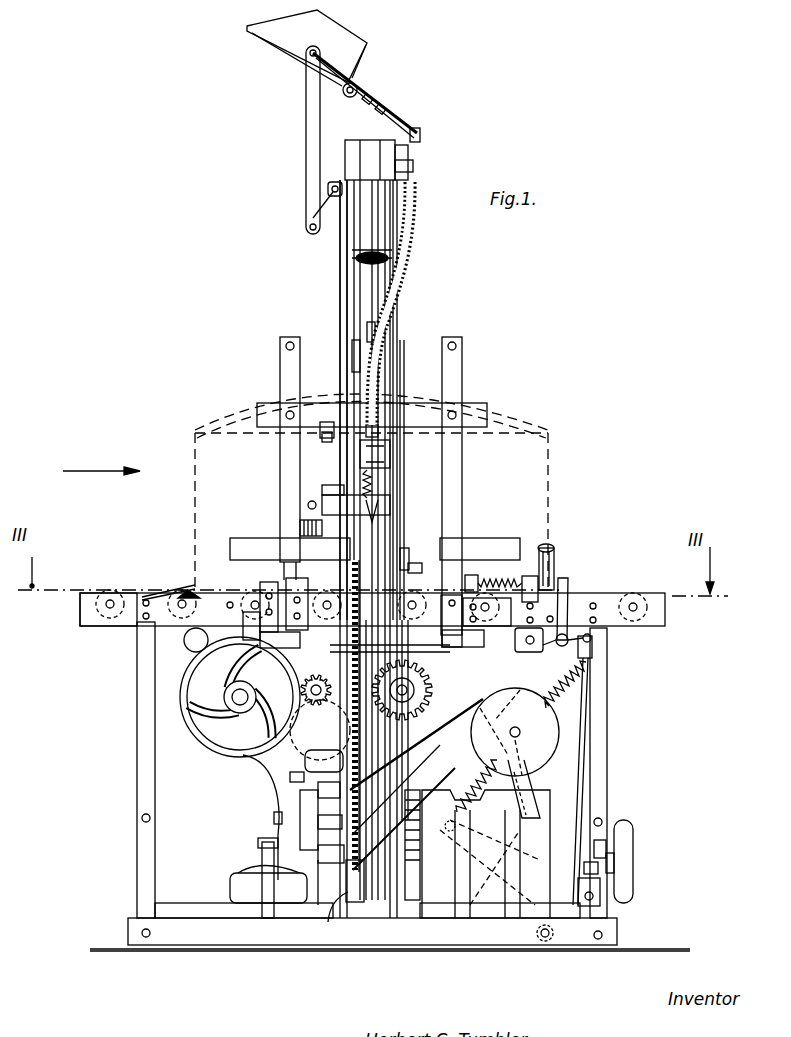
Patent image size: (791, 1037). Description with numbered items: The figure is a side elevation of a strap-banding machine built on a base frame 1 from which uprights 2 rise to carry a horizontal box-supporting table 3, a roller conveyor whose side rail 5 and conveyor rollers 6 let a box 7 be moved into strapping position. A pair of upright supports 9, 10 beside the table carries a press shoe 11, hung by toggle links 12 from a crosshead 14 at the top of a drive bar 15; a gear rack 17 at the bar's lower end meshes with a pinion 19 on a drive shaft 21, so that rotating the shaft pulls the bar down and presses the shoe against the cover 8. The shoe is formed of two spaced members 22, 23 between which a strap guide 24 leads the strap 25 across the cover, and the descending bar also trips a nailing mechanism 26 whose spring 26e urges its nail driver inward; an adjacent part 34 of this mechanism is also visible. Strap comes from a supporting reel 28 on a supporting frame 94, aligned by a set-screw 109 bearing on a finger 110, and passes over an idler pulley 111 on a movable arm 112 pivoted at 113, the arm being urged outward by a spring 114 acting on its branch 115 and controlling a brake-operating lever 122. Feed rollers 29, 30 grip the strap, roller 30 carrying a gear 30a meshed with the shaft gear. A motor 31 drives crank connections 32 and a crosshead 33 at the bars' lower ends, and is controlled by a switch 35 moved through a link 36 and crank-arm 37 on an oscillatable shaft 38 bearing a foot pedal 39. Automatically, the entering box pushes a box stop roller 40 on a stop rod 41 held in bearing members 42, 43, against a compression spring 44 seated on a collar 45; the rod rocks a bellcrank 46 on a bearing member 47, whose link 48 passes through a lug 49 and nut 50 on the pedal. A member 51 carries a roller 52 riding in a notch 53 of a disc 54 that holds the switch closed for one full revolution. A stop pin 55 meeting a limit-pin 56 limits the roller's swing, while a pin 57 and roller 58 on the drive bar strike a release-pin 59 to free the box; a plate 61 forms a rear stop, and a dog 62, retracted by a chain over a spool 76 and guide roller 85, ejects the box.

The base frame 1 is at (222, 940).
The uprights 2 is at (137, 790).
The box-supporting table 3 is at (672, 625).
The side rail 5 is at (128, 626).
The conveyor rollers 6 is at (110, 591).
The box 7 is at (560, 470).
The cover 8 is at (218, 422).
The upright support 9 is at (400, 378).
The upright support 10 is at (345, 297).
The press shoe 11 is at (362, 332).
The toggle links 12 is at (376, 278).
The crosshead 14 is at (330, 207).
The drive bar 15 is at (345, 264).
The gear rack 17 is at (405, 652).
The pinion 19 is at (180, 694).
The drive shaft 21 is at (264, 707).
The spaced member 22 is at (398, 356).
The spaced member 23 is at (354, 352).
The strap guide 24 is at (360, 650).
The strap 25 is at (481, 700).
The nailing mechanism 26 is at (392, 453).
The spring 26e is at (362, 478).
The supporting reel 28 is at (412, 724).
The feed roller 29 is at (262, 780).
The feed roller 30 is at (432, 679).
The gear 30a is at (418, 690).
The motor 31 is at (492, 822).
The crank connections 32 is at (318, 792).
The crosshead 33 is at (320, 822).
The valve stem 34 is at (378, 508).
The switch 35 is at (240, 874).
The link 36 is at (258, 845).
The crank-arm 37 is at (275, 888).
The oscillatable shaft 38 is at (196, 910).
The foot pedal 39 is at (602, 850).
The box stop roller 40 is at (548, 546).
The stop rod 41 is at (450, 600).
The bearing member 42 is at (528, 576).
The bearing member 43 is at (280, 582).
The compression spring 44 is at (500, 580).
The collar 45 is at (473, 604).
The bellcrank 46 is at (566, 580).
The bearing member 47 is at (545, 652).
The link 48 is at (624, 829).
The lug 49 is at (598, 900).
The nut 50 is at (598, 870).
The spring holder 51 is at (336, 922).
The roller 52 is at (348, 870).
The notch 53 is at (440, 762).
The disc 54 is at (478, 777).
The stop pin 55 is at (408, 548).
The limit-pin 56 is at (420, 564).
The pin 57 is at (298, 530).
The roller 58 is at (318, 512).
The release-pin 59 is at (310, 586).
The plate 61 is at (168, 588).
The dog 62 is at (200, 592).
The spool 76 is at (316, 710).
The guide roller 85 is at (186, 648).
The supporting frame 94 is at (275, 818).
The set-screw 109 is at (291, 778).
The finger 110 is at (310, 762).
The idler pulley 111 is at (586, 704).
The movable arm 112 is at (532, 790).
The pivot 113 is at (545, 942).
The spring 114 is at (575, 690).
The branch 115 is at (478, 918).
The brake-operating lever 122 is at (320, 855).